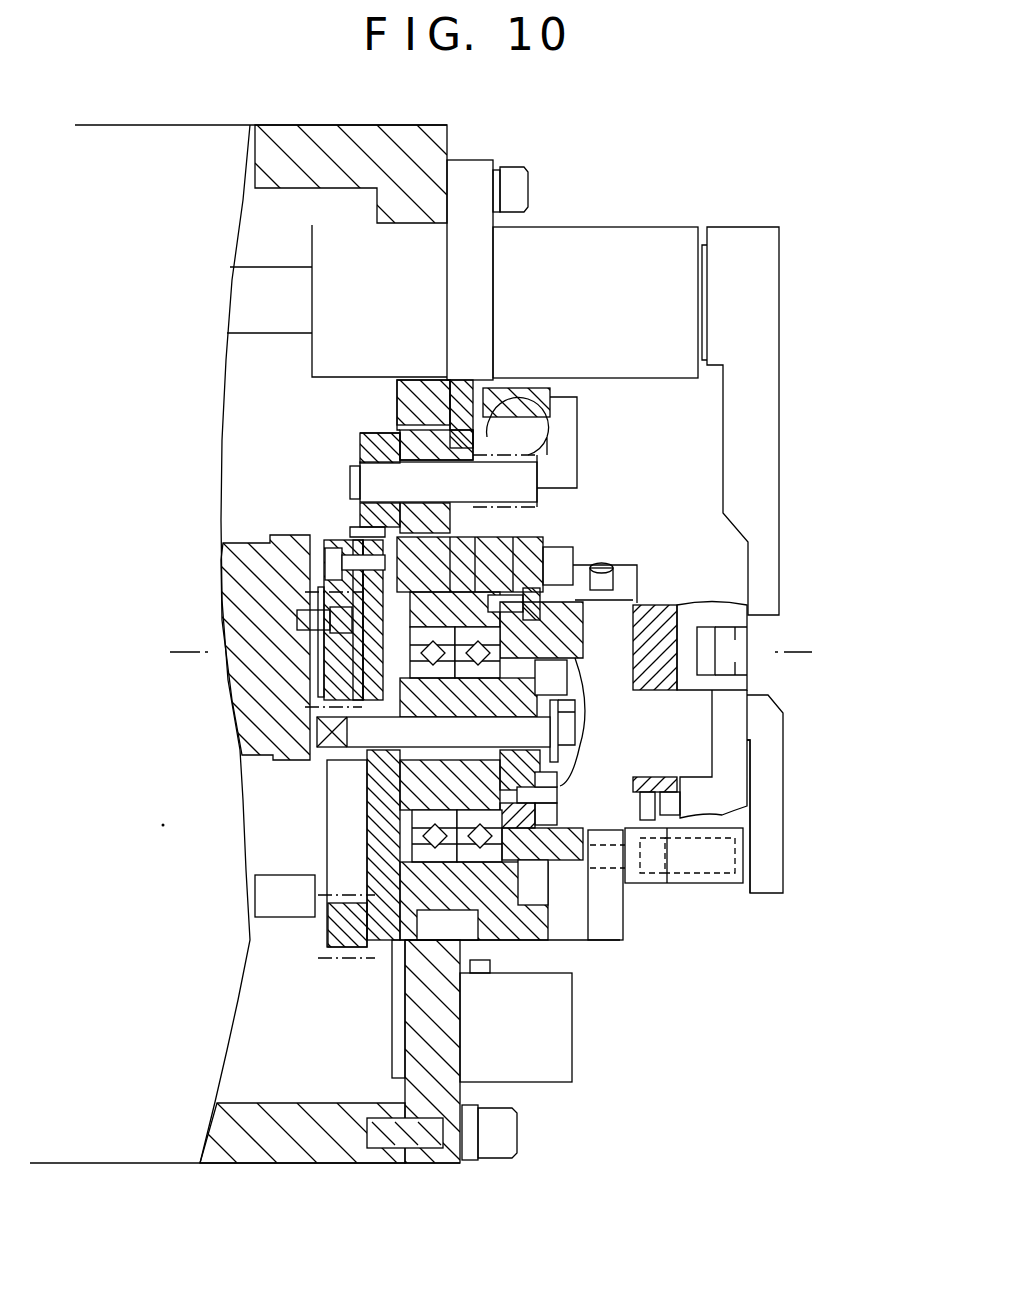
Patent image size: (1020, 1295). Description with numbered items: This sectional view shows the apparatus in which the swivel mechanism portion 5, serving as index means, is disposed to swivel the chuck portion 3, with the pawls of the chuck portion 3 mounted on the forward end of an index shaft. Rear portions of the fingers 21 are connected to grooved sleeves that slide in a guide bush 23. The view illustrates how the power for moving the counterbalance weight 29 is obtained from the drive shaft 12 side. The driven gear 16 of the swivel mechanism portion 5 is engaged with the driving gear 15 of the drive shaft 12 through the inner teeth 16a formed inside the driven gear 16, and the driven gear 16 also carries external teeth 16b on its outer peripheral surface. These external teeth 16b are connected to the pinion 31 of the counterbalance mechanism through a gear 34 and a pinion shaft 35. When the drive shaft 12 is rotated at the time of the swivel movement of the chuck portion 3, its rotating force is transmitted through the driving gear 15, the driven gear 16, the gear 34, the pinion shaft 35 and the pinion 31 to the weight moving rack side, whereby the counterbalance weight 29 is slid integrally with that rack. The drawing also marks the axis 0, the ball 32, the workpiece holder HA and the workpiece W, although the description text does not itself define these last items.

The chuck portion 3 is at (725, 731).
The swivel mechanism portion 5 is at (315, 496).
The drive shaft 12 is at (242, 708).
The driving gear 15 is at (320, 678).
The driven gear 16 is at (328, 805).
The inner teeth 16a is at (330, 900).
The external teeth 16b is at (355, 522).
The fingers 21 is at (778, 410).
The guide bush 23 is at (634, 228).
The counterbalance weight 29 is at (553, 410).
The pinion 31 is at (527, 480).
The ball 32 is at (540, 438).
The gear 34 is at (372, 438).
The pinion shaft 35 is at (372, 480).
The spindle axis 0 is at (516, 653).
The workpiece holder HA is at (748, 632).
The workpiece W is at (742, 792).